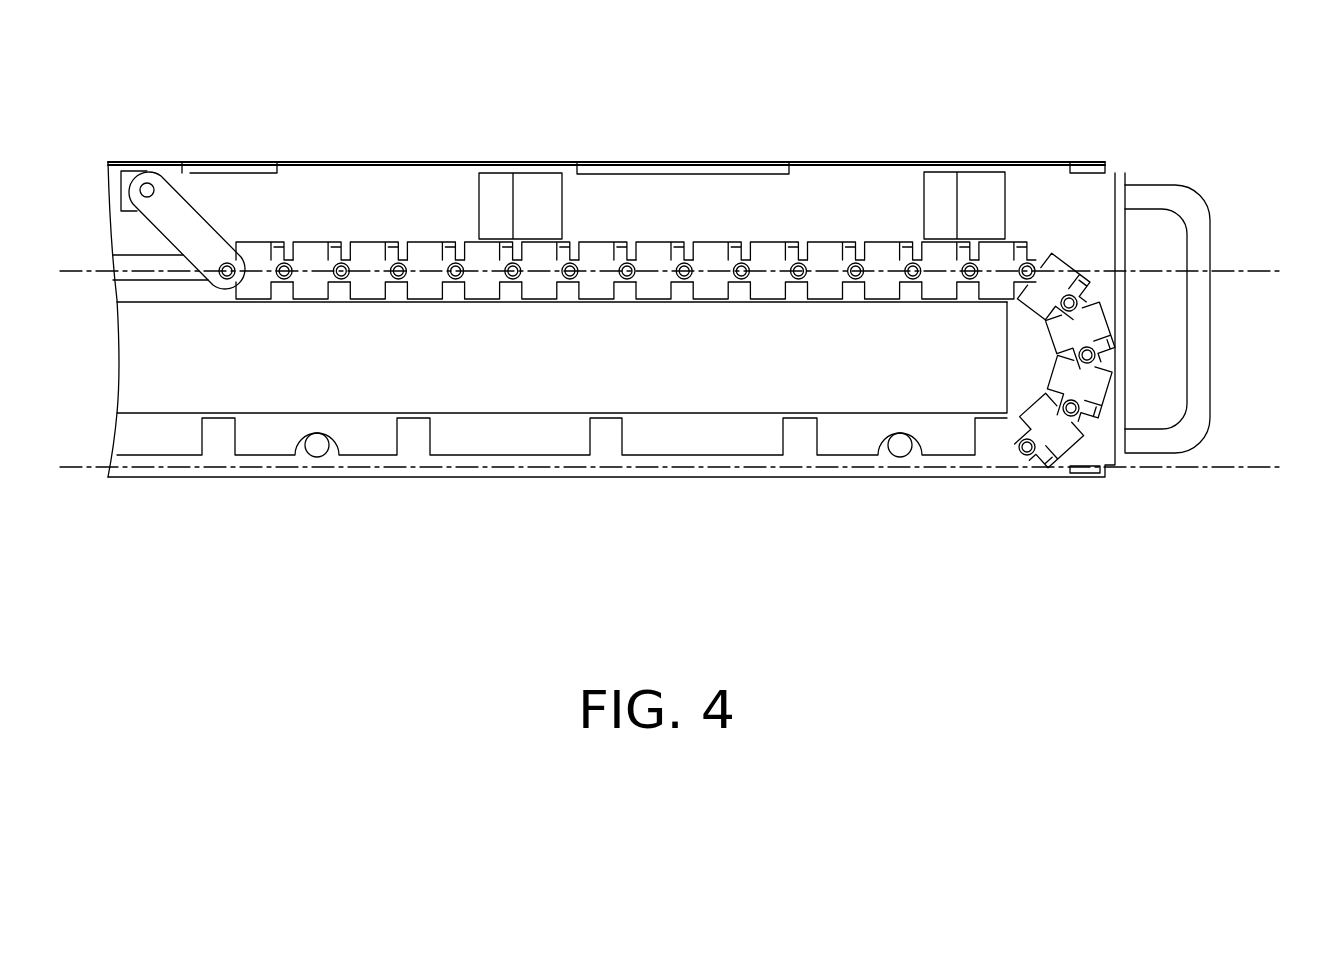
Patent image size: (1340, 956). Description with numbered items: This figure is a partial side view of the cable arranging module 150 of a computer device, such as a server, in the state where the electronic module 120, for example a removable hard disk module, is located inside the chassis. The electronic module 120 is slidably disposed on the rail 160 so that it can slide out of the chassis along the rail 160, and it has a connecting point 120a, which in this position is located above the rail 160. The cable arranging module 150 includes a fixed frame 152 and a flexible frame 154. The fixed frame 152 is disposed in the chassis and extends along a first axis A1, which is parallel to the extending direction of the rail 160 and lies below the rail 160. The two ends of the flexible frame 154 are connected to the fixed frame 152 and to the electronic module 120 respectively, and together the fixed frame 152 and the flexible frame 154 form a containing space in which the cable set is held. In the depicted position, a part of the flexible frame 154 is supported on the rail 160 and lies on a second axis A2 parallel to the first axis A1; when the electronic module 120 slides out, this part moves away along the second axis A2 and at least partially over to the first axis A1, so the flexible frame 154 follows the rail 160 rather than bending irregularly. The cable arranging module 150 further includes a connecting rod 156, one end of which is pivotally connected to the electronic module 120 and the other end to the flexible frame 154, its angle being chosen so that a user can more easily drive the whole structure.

The electronic module 120 is at (872, 210).
The connecting point 120a is at (147, 187).
The cable arranging module 150 is at (1115, 532).
The fixed frame 152 is at (803, 456).
The flexible frame 154 is at (1095, 313).
The connecting rod 156 is at (198, 233).
The rail 160 is at (493, 378).
The first axis A1 is at (1270, 466).
The second axis A2 is at (1272, 271).